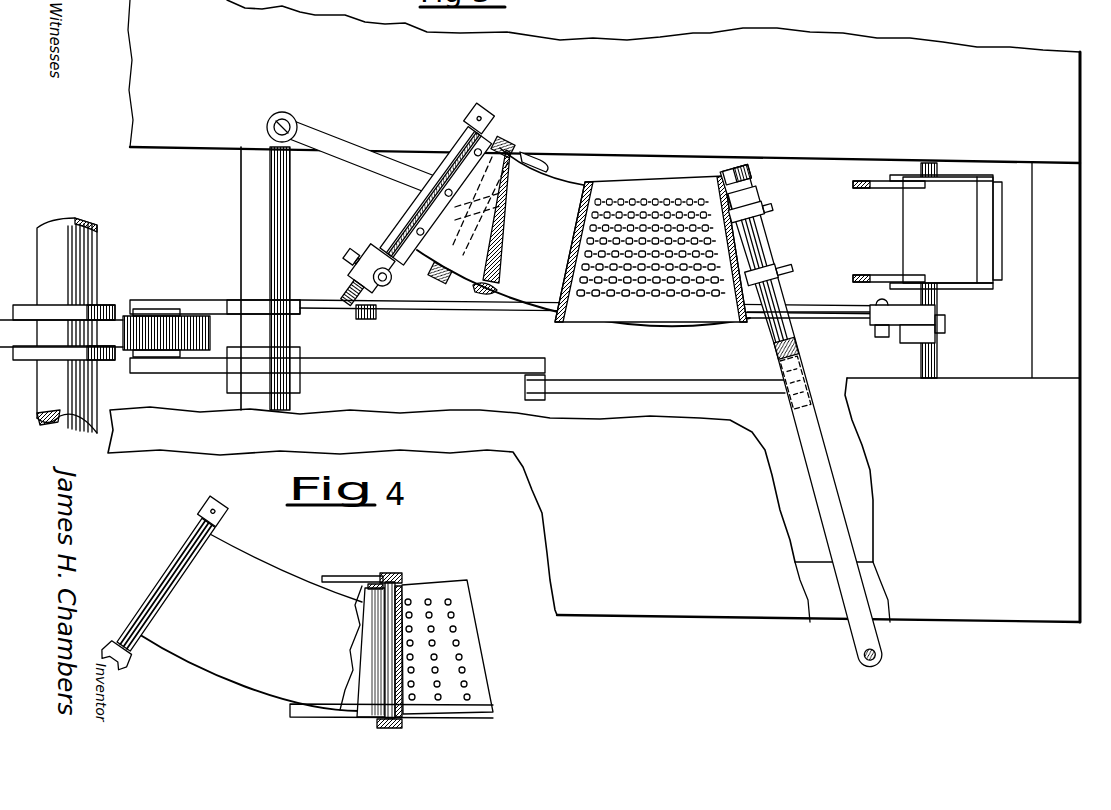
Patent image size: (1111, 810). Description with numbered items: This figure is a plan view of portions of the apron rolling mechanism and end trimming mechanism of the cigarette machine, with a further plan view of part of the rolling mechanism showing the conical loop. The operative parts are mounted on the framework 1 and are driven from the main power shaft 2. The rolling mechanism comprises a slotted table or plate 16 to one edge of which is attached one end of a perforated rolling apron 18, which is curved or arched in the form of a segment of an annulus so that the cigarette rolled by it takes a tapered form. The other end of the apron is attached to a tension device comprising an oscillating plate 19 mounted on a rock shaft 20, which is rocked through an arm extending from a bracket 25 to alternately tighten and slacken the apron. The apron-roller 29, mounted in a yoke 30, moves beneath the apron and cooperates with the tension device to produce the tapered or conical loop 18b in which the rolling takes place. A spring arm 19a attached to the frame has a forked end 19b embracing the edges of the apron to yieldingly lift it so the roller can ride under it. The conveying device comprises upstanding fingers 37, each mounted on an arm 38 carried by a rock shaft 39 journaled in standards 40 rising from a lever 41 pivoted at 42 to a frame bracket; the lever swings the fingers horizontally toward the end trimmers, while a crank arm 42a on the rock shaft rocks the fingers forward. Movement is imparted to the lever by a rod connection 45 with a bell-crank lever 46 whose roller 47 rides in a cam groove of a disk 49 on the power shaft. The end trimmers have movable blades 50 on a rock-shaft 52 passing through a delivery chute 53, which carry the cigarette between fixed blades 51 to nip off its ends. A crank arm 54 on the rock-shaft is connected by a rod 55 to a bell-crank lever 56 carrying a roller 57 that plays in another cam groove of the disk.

In FIG. 3, the framework 1 is at (594, 311).
In FIG. 3, the main power shaft 2 is at (100, 247).
In FIG. 3, the slotted table or plate 16 is at (636, 188).
In FIG. 4, the slotted table or plate 16 is at (462, 582).
In FIG. 3, the perforated rolling apron 18 is at (595, 305).
In FIG. 4, the perforated rolling apron 18 is at (249, 622).
In FIG. 4, the conical loop 18b is at (368, 647).
In FIG. 3, the oscillating plate 19 is at (407, 224).
In FIG. 4, the oscillating plate 19 is at (213, 532).
In FIG. 3, the spring arm 19a is at (366, 162).
In FIG. 3, the forked end 19b is at (549, 165).
In FIG. 3, the rock shaft 20 is at (358, 286).
In FIG. 4, the rock shaft 20 is at (205, 533).
In FIG. 3, the bracket 25 is at (392, 280).
In FIG. 3, the apron-roller 29 is at (452, 276).
In FIG. 4, the apron-roller 29 is at (405, 586).
In FIG. 3, the yoke 30 is at (445, 284).
In FIG. 4, the yoke 30 is at (393, 575).
In FIG. 3, the upstanding fingers 37 is at (773, 208).
In FIG. 3, the arm 38 is at (780, 264).
In FIG. 3, the rock shaft 39 is at (778, 298).
In FIG. 3, the brackets or standards 40 is at (762, 196).
In FIG. 3, the lever 41 is at (812, 463).
In FIG. 3, the pivot 42 is at (862, 656).
In FIG. 3, the crank arm 42a is at (722, 168).
In FIG. 3, the rod connection 45 is at (650, 386).
In FIG. 3, the bell-crank lever 46 is at (303, 366).
In FIG. 3, the roller 47 is at (167, 358).
In FIG. 3, the disk 49 is at (150, 342).
In FIG. 3, the movable blades 50 is at (880, 190).
In FIG. 3, the fixed blades 51 is at (905, 178).
In FIG. 3, the rock-shaft 52 is at (938, 306).
In FIG. 3, the delivery chute 53 is at (970, 236).
In FIG. 3, the crank arm 54 is at (946, 324).
In FIG. 3, the rod 55 is at (850, 311).
In FIG. 3, the bell-crank lever 56 is at (362, 314).
In FIG. 3, the roller 57 is at (168, 316).